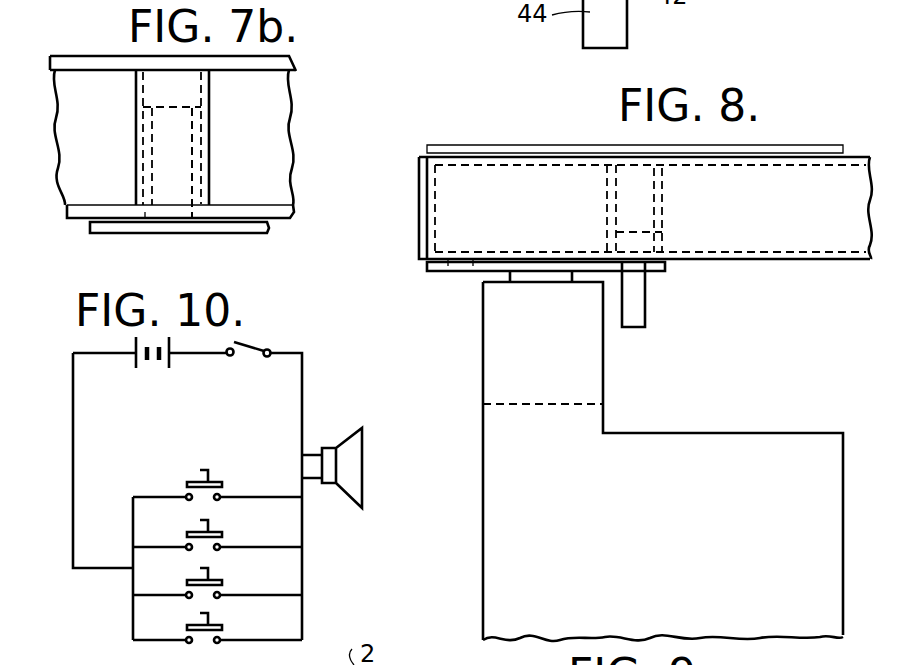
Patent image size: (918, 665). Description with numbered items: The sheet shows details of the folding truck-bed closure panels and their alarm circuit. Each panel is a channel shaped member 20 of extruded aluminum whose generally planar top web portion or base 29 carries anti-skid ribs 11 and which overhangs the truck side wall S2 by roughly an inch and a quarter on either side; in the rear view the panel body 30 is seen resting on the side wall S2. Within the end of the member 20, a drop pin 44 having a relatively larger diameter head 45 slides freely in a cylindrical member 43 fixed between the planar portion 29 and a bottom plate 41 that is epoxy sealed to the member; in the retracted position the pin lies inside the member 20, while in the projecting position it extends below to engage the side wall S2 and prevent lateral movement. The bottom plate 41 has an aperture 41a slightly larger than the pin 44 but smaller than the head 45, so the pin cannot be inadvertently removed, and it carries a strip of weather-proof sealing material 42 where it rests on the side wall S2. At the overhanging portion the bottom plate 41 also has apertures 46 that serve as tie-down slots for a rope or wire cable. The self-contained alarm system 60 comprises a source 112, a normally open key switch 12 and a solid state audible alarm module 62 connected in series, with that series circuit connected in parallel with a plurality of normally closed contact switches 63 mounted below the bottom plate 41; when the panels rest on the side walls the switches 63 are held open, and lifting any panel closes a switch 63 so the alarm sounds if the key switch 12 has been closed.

In FIG. 7b, the planar top web portion 29 is at (108, 58).
In FIG. 7b, the head 45 is at (187, 92).
In FIG. 8, the head 45 is at (642, 244).
In FIG. 7b, the cylindrical member 43 is at (207, 134).
In FIG. 8, the cylindrical member 43 is at (658, 197).
In FIG. 7b, the drop pin 44 is at (185, 180).
In FIG. 8, the drop pin 44 is at (634, 303).
In FIG. 7b, the bottom plate 41 is at (67, 214).
In FIG. 8, the bottom plate 41 is at (430, 267).
In FIG. 7b, the sealing material strip 42 is at (92, 225).
In FIG. 8, the sealing material strip 42 is at (556, 278).
In FIG. 7b, the aperture 41a is at (153, 211).
In FIG. 8, the channel shaped member 20 is at (600, 162).
In FIG. 8, the anti-skid ribs 11 is at (809, 146).
In FIG. 8, the housing 30 is at (419, 205).
In FIG. 8, the apertures 46 is at (462, 268).
In FIG. 8, the side wall S2 is at (512, 445).
In FIG. 10, the key switch 12 is at (257, 346).
In FIG. 10, the source 112 is at (152, 372).
In FIG. 10, the audible alarm module 62 is at (364, 446).
In FIG. 10, the contact switches 63 is at (220, 481).
In FIG. 10, the alarm system 60 is at (243, 547).